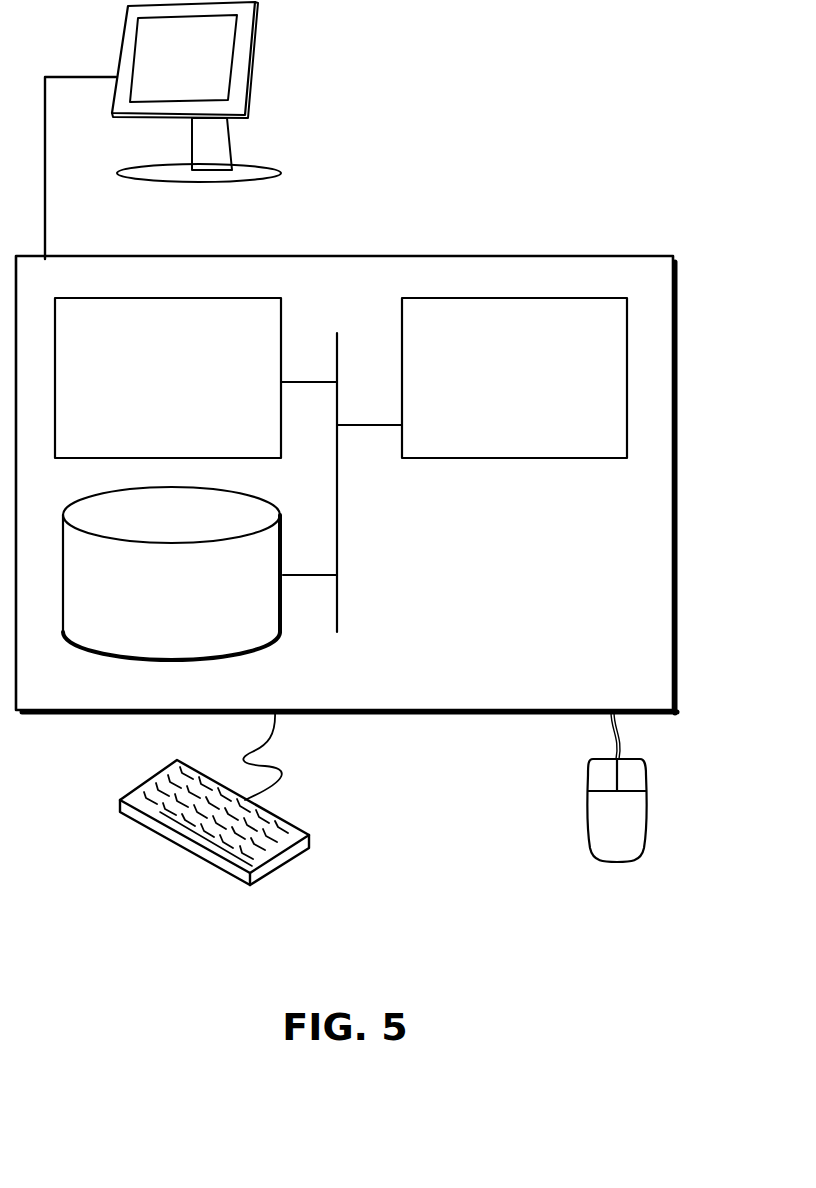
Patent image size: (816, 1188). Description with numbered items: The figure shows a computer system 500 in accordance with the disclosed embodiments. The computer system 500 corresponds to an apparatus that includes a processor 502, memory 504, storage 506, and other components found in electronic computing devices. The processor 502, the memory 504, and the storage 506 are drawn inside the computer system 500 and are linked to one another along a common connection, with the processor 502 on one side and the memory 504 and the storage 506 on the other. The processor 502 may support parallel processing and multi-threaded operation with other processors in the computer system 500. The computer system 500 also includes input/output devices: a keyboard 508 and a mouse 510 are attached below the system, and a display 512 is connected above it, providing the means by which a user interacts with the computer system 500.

The computer system 500 is at (392, 235).
The processor 502 is at (496, 390).
The memory 504 is at (147, 390).
The storage 506 is at (152, 601).
The keyboard 508 is at (138, 823).
The mouse 510 is at (595, 832).
The display 512 is at (163, 130).